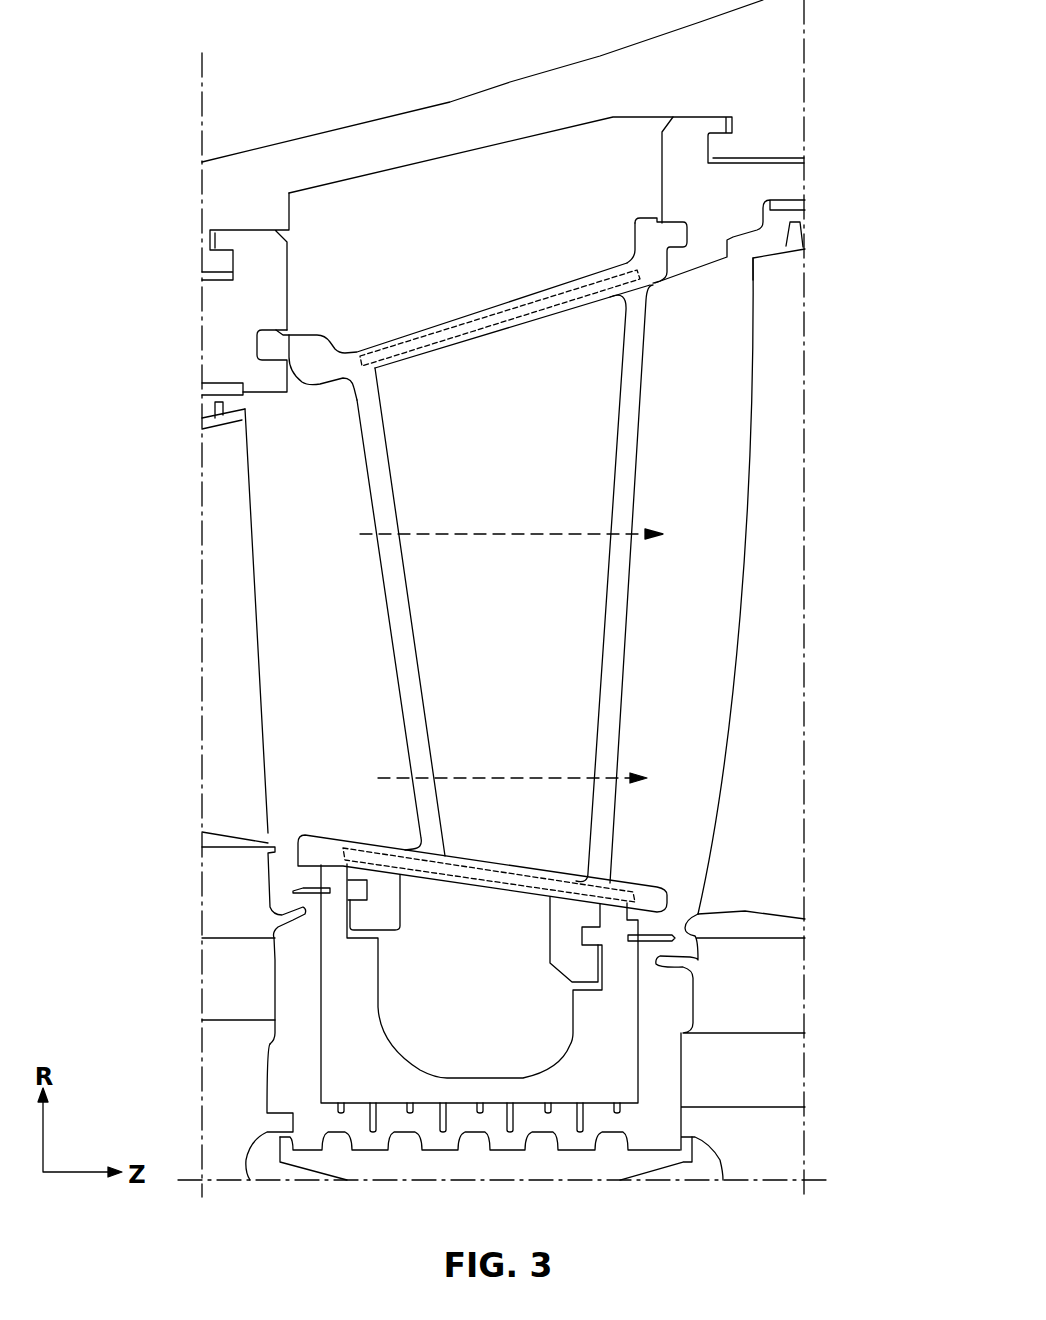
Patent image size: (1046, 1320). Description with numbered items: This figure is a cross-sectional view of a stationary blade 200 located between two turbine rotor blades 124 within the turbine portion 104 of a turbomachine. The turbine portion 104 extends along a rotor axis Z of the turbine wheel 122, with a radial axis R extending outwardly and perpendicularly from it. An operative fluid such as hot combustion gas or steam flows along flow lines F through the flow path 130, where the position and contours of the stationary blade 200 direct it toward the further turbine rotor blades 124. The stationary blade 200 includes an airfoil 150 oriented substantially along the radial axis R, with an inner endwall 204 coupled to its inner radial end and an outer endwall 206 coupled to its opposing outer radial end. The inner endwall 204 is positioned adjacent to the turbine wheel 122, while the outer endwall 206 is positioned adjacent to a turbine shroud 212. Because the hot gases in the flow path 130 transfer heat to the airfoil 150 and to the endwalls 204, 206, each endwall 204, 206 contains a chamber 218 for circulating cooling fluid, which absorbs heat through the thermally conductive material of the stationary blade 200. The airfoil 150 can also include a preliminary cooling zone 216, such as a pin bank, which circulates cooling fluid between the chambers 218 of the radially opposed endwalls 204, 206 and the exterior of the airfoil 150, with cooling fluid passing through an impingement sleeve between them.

The turbine portion 104 is at (190, 477).
The turbine wheel 122 is at (215, 1124).
The turbine rotor blade 124 is at (233, 600).
The flow path 130 is at (352, 682).
The airfoil 150 is at (451, 640).
The stationary blade 200 is at (380, 480).
The inner endwall 204 is at (347, 840).
The outer endwall 206 is at (453, 348).
The turbine shroud 212 is at (230, 362).
The preliminary cooling zone 216 is at (603, 448).
The chamber 218 is at (572, 293).